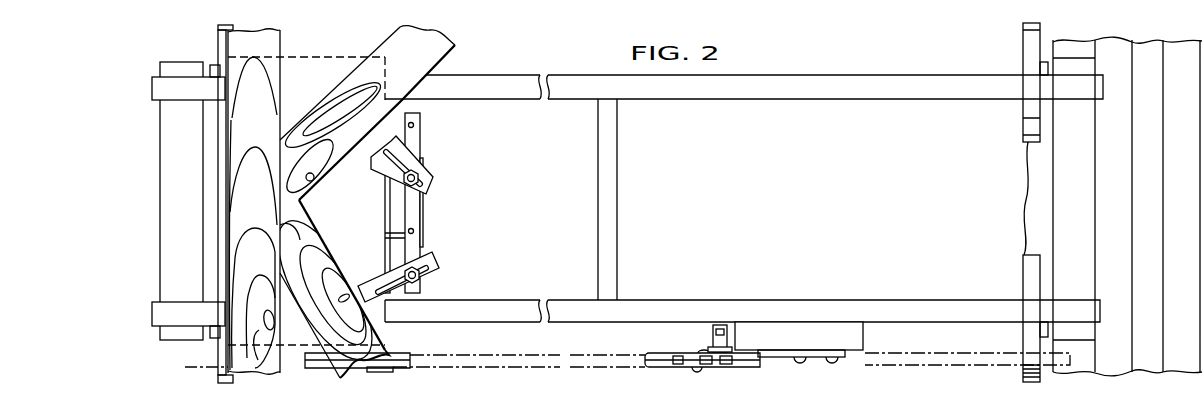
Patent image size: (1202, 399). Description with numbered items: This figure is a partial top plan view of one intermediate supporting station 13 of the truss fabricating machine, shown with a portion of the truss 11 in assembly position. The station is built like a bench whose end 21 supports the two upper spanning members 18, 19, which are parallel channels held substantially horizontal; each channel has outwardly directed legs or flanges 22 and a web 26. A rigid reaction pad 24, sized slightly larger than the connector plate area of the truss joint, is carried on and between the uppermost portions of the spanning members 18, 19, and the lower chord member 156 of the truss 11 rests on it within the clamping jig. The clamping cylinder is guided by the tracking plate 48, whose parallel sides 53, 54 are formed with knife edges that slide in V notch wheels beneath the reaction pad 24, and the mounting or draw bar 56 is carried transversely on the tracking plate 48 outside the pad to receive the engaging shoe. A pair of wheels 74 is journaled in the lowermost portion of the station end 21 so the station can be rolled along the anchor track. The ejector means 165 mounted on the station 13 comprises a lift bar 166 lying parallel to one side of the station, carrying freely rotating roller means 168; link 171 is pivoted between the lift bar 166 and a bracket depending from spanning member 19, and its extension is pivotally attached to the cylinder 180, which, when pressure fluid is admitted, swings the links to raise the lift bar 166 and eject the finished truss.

The truss 11 is at (220, 117).
The intermediate supporting station 13 is at (141, 187).
The upper spanning member 18 is at (982, 102).
The upper spanning member 19 is at (940, 303).
The end of the supporting station 21 is at (172, 255).
The flange 22 is at (948, 74).
The reaction pad 24 is at (335, 62).
The web 26 is at (778, 100).
The tracking plate 48 is at (428, 218).
The side of the tracking plate 53 is at (424, 246).
The side of the tracking plate 54 is at (423, 160).
The mounting bar 56 is at (422, 122).
The wheel 74 is at (220, 30).
The lower chord member 156 is at (242, 198).
The ejector means 165 is at (761, 336).
The lift bar 166 is at (662, 352).
The roller means 168 is at (692, 352).
The link 171 is at (737, 324).
The cylinder 180 is at (848, 338).